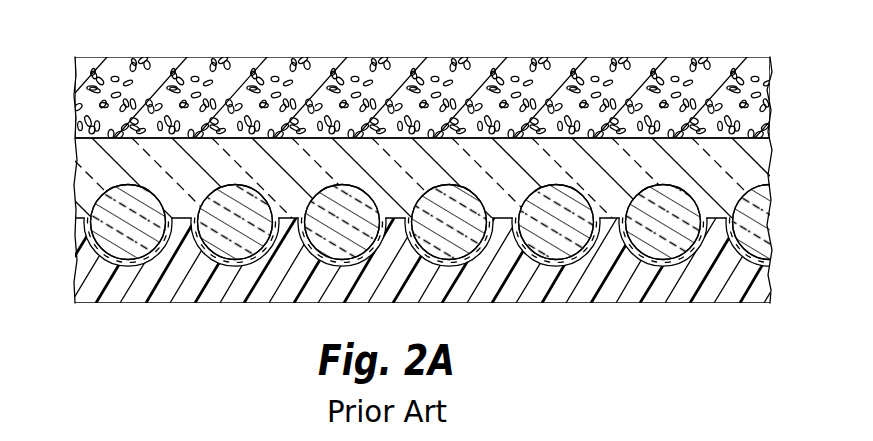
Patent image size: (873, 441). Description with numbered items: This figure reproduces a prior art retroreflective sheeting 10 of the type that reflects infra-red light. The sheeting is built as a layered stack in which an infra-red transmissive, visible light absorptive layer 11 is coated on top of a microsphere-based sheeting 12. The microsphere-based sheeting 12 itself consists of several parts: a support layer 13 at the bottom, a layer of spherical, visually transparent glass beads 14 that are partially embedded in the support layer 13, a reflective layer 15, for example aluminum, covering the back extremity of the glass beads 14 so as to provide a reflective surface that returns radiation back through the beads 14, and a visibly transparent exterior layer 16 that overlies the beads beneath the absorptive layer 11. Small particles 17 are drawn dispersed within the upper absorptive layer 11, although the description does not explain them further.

The prior art retroreflective sheeting 10 is at (668, 40).
The infra-red transmissive, visible light absorptive layer 11 is at (413, 76).
The microsphere-based sheeting 12 is at (432, 241).
The support layer 13 is at (762, 288).
The glass beads 14 is at (770, 217).
The reflective layer 15 is at (736, 258).
The visibly transparent exterior layer 16 is at (765, 152).
The particles 17 is at (571, 63).